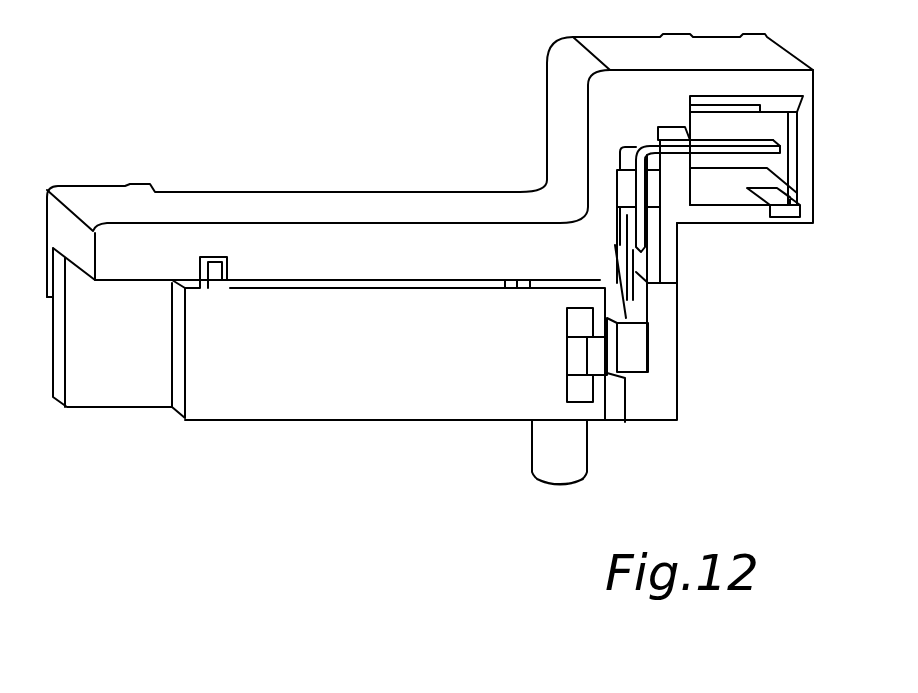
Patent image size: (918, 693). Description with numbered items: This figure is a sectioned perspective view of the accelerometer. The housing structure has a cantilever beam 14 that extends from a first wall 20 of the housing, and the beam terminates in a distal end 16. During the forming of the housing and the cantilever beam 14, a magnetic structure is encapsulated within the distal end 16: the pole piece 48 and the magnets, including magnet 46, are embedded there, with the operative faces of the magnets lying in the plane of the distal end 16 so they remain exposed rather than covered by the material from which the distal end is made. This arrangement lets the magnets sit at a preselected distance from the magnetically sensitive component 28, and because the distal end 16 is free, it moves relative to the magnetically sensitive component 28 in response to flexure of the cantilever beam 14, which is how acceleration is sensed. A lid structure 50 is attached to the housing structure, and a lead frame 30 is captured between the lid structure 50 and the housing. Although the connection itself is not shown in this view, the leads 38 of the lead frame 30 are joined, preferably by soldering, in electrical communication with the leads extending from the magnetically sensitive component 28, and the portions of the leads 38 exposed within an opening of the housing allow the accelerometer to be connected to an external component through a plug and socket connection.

The cantilever beam 14 is at (320, 398).
The distal end 16 is at (597, 413).
The first wall 20 is at (180, 385).
The magnetically sensitive component 28 is at (630, 347).
The lead frame 30 is at (652, 190).
The leads 38 is at (732, 150).
The magnet 46 is at (607, 373).
The pole piece 48 is at (573, 358).
The lid structure 50 is at (317, 247).